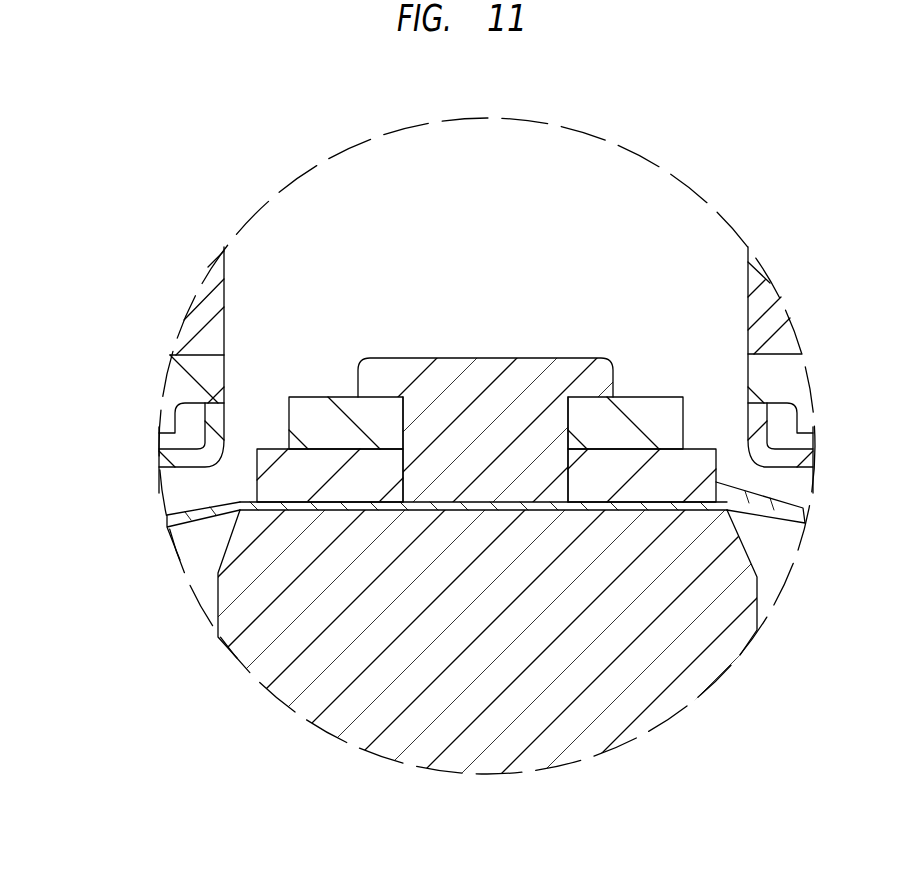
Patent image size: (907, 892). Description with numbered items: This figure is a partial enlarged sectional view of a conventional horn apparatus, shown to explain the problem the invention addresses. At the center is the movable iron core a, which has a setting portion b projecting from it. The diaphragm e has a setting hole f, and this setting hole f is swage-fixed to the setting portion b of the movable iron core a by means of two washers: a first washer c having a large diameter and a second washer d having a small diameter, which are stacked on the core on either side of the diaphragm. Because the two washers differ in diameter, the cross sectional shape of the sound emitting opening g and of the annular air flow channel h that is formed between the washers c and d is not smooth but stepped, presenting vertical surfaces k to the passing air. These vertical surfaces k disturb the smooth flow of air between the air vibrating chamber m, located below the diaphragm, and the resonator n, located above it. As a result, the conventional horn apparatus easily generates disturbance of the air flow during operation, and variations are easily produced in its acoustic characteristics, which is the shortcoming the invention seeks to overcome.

The movable iron core a is at (520, 655).
The setting portion b is at (487, 445).
The first washer c is at (298, 485).
The second washer d is at (327, 423).
The diaphragm e is at (226, 514).
The setting hole f is at (400, 510).
The sound emitting opening g is at (805, 500).
The annular air flow channel h is at (694, 390).
The vertical surfaces k is at (685, 423).
The air vibrating chamber m is at (150, 512).
The resonator n is at (550, 192).